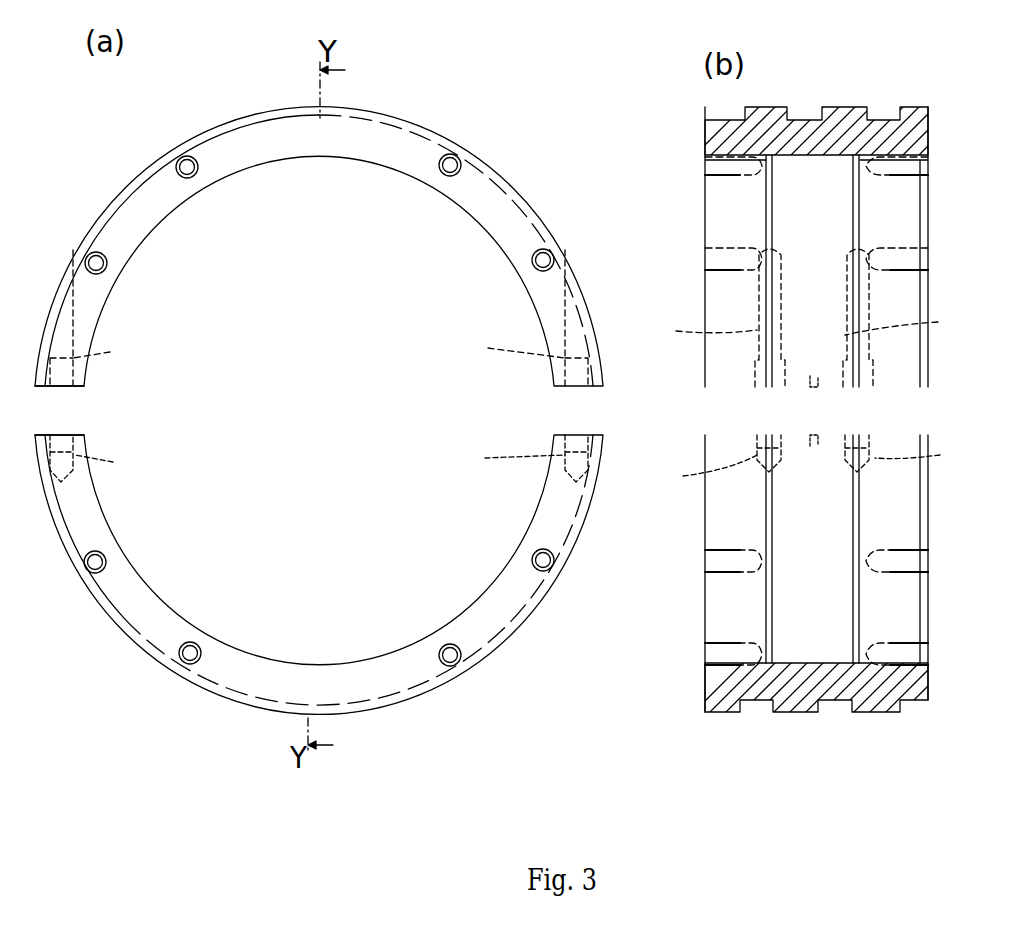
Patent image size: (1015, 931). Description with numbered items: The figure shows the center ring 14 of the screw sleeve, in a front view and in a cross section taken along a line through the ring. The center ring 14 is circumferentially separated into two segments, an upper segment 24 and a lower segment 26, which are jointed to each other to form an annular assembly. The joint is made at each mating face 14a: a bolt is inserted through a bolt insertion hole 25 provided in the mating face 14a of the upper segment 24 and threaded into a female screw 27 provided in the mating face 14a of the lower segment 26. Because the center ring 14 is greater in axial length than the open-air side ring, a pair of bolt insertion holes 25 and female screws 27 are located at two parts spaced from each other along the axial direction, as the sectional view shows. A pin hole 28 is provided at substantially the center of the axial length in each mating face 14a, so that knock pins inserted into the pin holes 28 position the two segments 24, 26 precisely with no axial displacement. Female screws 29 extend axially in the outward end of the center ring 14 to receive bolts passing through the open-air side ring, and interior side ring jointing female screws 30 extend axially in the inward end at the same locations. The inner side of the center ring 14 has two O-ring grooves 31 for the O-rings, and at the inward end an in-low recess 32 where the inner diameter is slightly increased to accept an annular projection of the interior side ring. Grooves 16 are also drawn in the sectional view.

The center ring 14 is at (100, 183).
The mating face 14a is at (75, 436).
The engaging grooves 16 is at (866, 119).
The upper segment 24 is at (142, 163).
The bolt insertion hole 25 is at (509, 318).
The lower segment 26 is at (97, 617).
The female screw 27 is at (510, 463).
The pin hole 28 is at (812, 434).
The female screw 29 is at (195, 178).
The interior side ring jointing female screw 30 is at (912, 258).
The O-ring groove 31 is at (853, 230).
The in-low recess 32 is at (930, 152).